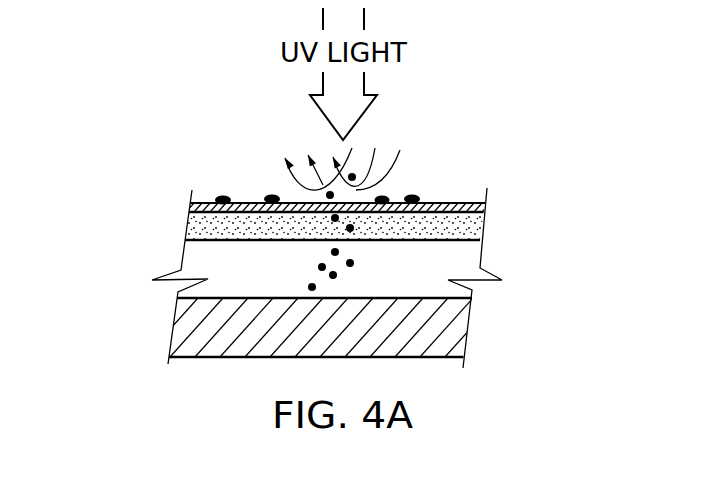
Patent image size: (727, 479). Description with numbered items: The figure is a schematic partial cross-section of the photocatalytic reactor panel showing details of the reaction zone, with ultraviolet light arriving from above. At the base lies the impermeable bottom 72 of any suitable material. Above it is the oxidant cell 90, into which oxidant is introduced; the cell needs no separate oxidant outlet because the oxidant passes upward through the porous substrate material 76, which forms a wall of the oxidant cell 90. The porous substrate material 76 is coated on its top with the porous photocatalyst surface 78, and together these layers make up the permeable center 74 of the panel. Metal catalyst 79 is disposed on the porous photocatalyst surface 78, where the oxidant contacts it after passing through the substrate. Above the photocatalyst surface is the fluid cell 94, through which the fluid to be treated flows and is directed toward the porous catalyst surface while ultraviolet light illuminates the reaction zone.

The impermeable bottom 72 is at (445, 327).
The permeable center 74 is at (207, 232).
The porous substrate material 76 is at (468, 230).
The porous photocatalyst surface 78 is at (455, 202).
The metal catalyst 79 is at (412, 197).
The oxidant cell 90 is at (448, 262).
The fluid cell 94 is at (248, 171).